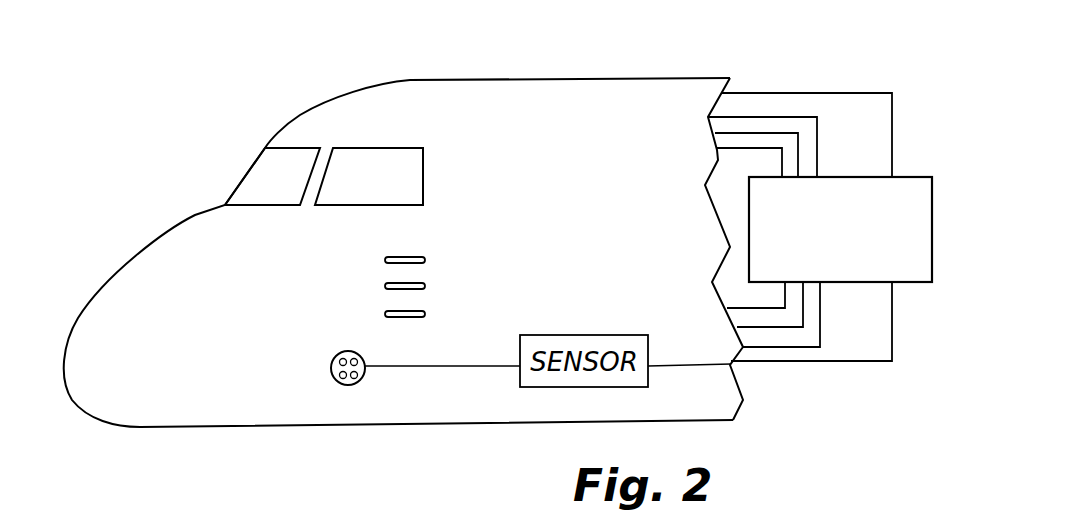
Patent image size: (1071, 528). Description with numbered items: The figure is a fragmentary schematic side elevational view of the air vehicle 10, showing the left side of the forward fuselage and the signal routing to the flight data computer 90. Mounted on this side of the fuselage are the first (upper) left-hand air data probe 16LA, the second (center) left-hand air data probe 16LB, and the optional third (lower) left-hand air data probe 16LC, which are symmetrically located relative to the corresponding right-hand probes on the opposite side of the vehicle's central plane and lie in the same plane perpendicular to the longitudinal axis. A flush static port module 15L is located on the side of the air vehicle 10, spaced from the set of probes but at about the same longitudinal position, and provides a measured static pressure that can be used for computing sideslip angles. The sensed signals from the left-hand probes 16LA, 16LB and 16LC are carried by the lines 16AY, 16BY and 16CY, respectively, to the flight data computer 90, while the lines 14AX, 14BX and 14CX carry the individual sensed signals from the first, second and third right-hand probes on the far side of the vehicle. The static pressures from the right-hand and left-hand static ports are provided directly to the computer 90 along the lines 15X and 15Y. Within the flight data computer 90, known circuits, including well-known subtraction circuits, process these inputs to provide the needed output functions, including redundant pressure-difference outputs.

The air vehicle 10 is at (538, 80).
The line 14AX is at (747, 113).
The line 14BX is at (787, 130).
The line 14CX is at (783, 155).
The line 15X is at (800, 92).
The line 15Y is at (892, 297).
The flush static port module 15L is at (356, 384).
The first left-hand air data probe 16LA is at (425, 258).
The second left-hand air data probe 16LB is at (425, 286).
The third left-hand air data probe 16LC is at (425, 314).
The line 16AY is at (821, 327).
The line 16BY is at (792, 326).
The line 16CY is at (755, 308).
The flight data computer 90 is at (907, 172).